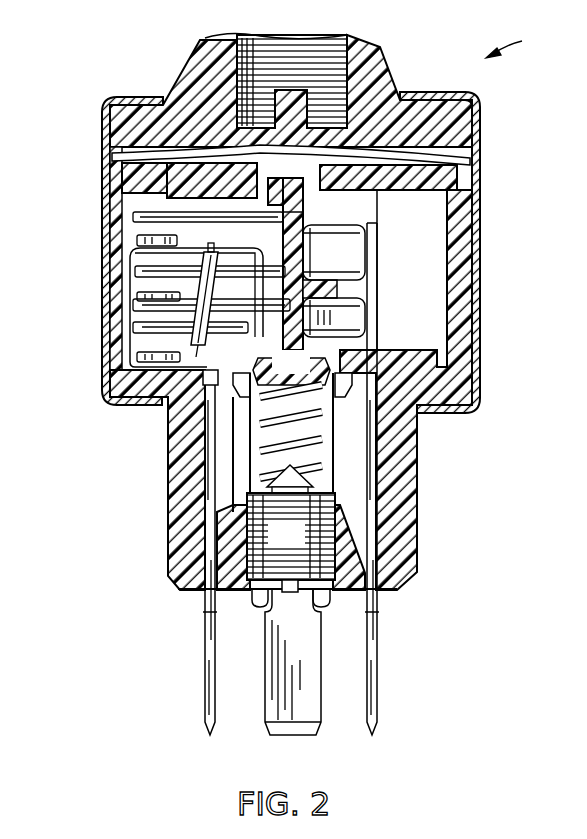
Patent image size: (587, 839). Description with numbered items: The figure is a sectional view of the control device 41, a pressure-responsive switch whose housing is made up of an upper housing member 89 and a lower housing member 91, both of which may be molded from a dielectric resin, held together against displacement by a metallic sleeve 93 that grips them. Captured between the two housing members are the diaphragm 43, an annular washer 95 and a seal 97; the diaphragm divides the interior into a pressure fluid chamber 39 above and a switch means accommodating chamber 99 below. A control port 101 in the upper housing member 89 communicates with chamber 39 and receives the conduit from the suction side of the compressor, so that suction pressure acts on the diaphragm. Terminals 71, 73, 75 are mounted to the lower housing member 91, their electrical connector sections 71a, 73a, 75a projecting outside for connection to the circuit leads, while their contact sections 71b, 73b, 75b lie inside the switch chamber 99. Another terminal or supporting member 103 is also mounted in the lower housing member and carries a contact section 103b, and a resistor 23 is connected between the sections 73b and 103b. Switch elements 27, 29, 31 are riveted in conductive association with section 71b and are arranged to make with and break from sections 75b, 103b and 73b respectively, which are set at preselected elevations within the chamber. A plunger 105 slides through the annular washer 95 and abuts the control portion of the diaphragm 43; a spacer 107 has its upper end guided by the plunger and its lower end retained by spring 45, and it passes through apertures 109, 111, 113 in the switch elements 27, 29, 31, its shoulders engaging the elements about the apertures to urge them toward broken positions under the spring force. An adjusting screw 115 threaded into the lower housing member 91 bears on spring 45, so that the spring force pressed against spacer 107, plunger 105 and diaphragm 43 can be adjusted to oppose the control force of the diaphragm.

The control port 101 is at (235, 40).
The upper housing member 89 is at (153, 105).
The pressure fluid chamber 39 is at (362, 151).
The diaphragm 43 is at (434, 99).
The control device 41 is at (552, 50).
The seal 97 is at (473, 143).
The annular washer 95 is at (473, 188).
The switch means accommodating chamber 99 is at (448, 227).
The metallic sleeve 93 is at (483, 334).
The lower housing member 91 is at (408, 538).
The switch element 27 is at (122, 212).
The switch means supporting or contact section 103b is at (122, 242).
The switch element 29 is at (125, 284).
The terminal or switch means supporting member 103 is at (125, 296).
The switch means supporting or contact section 75b is at (122, 312).
The switch element 31 is at (125, 333).
The switch means supporting or contact section 73b is at (125, 372).
The resistor 23 is at (208, 330).
The plunger 105 is at (312, 178).
The aperture 109 is at (304, 224).
The aperture 111 is at (305, 273).
The switch means supporting or contact section 71b is at (380, 287).
The aperture 113 is at (308, 327).
The spacer 107 is at (307, 373).
The spring 45 is at (329, 472).
The adjusting screw 115 is at (301, 546).
The electrical connector section 73a is at (204, 648).
The electrical connector section 75a is at (266, 643).
The electrical connector section 71a is at (378, 634).
The terminal 73 is at (204, 716).
The terminal 75 is at (268, 716).
The terminal 71 is at (378, 714).